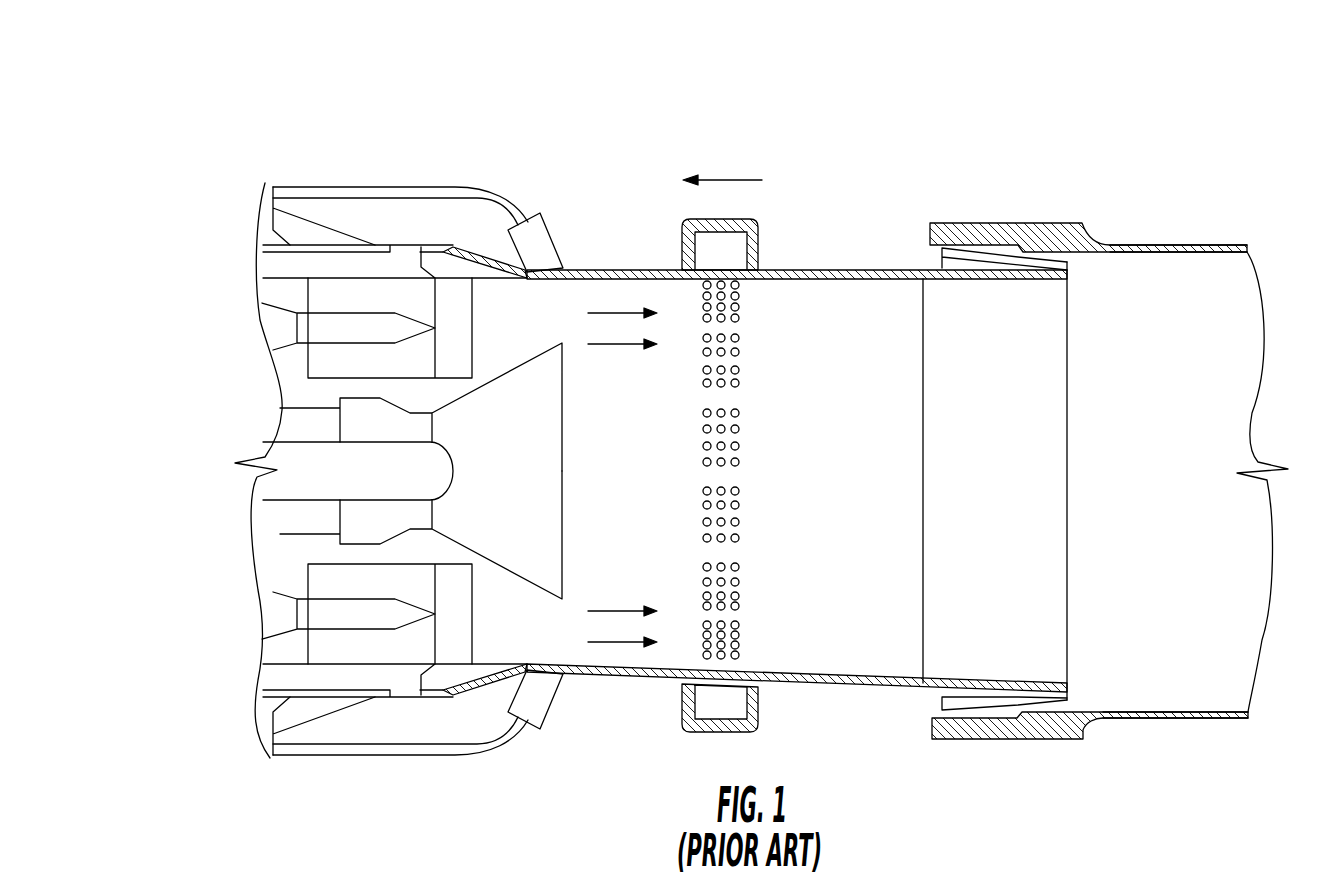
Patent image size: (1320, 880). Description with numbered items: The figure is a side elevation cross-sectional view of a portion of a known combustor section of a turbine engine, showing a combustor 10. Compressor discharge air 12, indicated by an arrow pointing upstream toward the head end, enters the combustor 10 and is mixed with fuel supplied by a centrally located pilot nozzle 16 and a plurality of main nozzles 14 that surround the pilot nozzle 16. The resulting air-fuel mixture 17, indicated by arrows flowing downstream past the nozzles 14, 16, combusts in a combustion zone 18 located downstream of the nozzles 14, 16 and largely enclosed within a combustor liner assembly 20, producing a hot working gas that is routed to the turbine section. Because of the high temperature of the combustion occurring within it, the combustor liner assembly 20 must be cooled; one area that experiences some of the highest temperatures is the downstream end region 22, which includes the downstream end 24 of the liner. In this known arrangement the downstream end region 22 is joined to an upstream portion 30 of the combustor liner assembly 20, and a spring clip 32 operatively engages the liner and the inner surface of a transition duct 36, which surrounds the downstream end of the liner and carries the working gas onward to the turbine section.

The combustor 10 is at (312, 108).
The compressor discharge air 12 is at (737, 179).
The main nozzles 14 is at (382, 325).
The pilot nozzle 16 is at (307, 478).
The air-fuel mixture 17 is at (612, 346).
The combustion zone 18 is at (842, 474).
The combustor liner assembly 20 is at (833, 270).
The downstream end region 22 is at (1040, 316).
The downstream end 24 is at (1066, 435).
The upstream portion 30 is at (889, 728).
The spring clip 32 is at (997, 252).
The transition duct 36 is at (1040, 230).